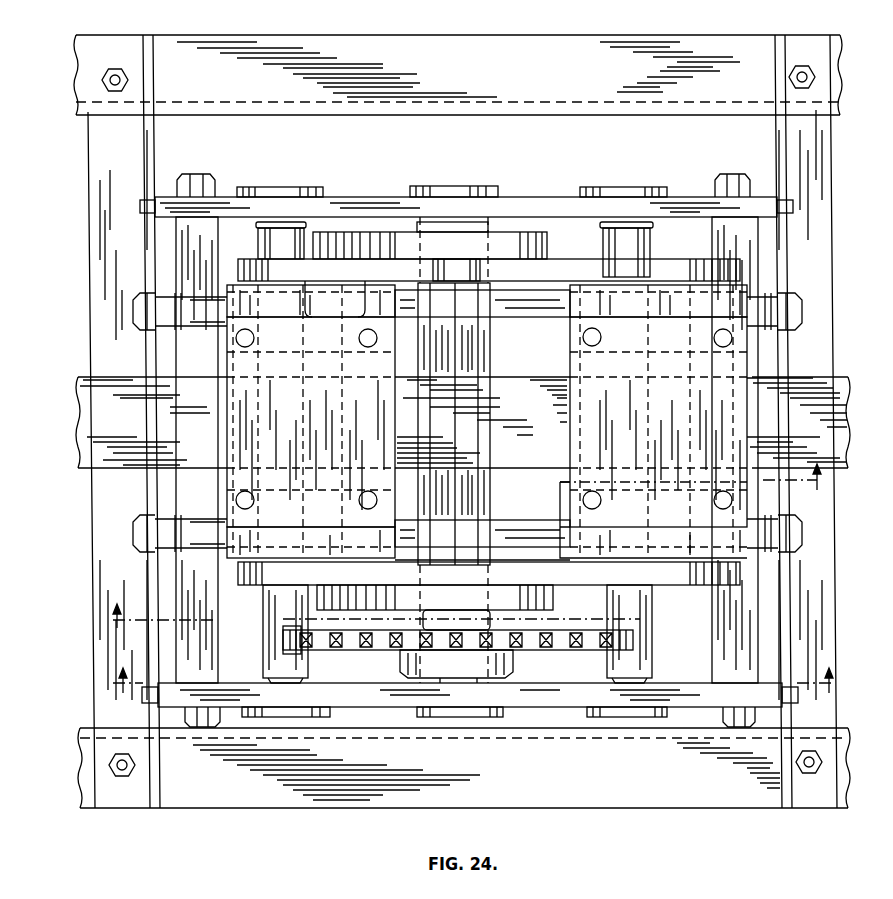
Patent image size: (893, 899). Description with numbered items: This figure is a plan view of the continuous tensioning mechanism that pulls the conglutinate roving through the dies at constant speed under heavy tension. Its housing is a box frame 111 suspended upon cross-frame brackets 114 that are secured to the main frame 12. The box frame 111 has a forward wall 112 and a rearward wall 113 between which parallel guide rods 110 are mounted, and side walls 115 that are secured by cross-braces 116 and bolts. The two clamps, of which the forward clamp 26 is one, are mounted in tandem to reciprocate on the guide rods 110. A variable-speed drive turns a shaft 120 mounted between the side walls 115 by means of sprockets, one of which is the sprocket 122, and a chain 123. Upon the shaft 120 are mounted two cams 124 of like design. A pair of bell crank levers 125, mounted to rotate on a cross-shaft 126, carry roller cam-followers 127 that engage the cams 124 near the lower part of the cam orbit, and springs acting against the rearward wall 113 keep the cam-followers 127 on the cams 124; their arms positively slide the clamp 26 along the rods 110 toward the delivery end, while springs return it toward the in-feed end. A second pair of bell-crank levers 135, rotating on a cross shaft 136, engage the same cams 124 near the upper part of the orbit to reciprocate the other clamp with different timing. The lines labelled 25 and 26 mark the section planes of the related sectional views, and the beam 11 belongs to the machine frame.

The middle frame beam 11 is at (799, 378).
The frame 12 is at (383, 38).
The guide rods 110 is at (523, 322).
The box frame 111 is at (548, 188).
The forward wall 112 is at (176, 272).
The rearward wall 113 is at (762, 262).
The cross-frame brackets 114 is at (92, 366).
The side walls 115 is at (512, 195).
The cross-braces 116 is at (219, 683).
The shaft 120 is at (493, 504).
The sprocket 122 is at (323, 650).
The chain 123 is at (533, 648).
The cams 124 is at (546, 258).
The bell crank levers 125 is at (251, 258).
The cross-shaft 126 is at (262, 626).
The roller cam-followers 127 is at (335, 259).
The bell-crank levers 135 is at (667, 267).
The cross shaft 136 is at (652, 629).
The section line 25 is at (473, 681).
The clamp 26 is at (466, 548).